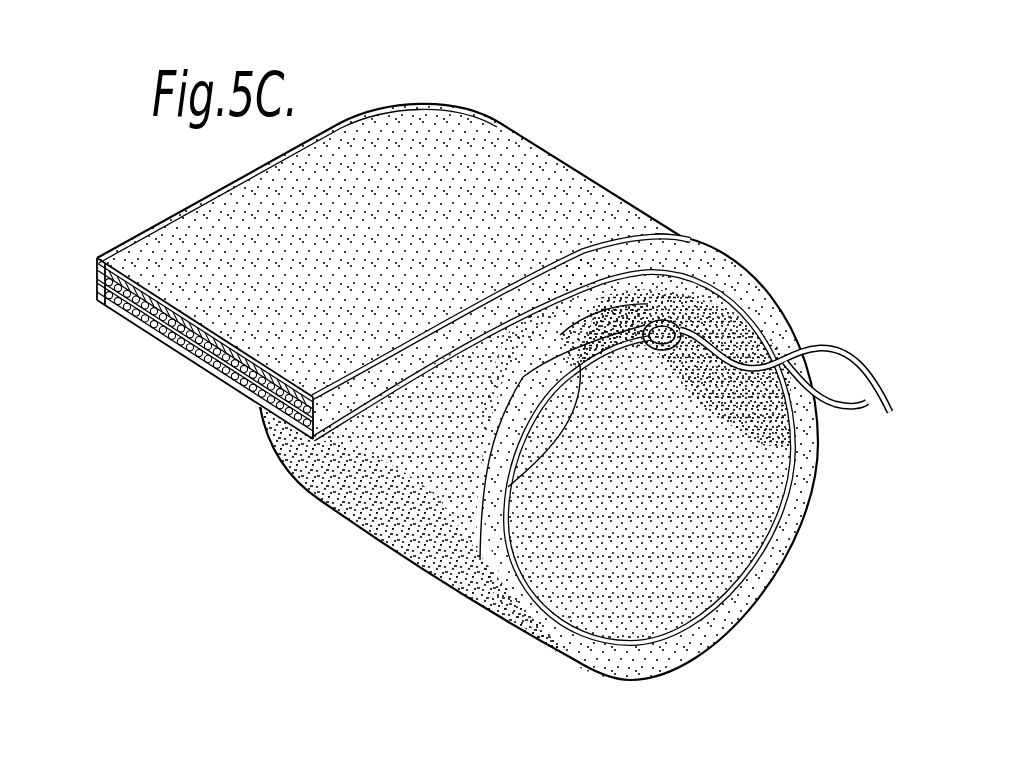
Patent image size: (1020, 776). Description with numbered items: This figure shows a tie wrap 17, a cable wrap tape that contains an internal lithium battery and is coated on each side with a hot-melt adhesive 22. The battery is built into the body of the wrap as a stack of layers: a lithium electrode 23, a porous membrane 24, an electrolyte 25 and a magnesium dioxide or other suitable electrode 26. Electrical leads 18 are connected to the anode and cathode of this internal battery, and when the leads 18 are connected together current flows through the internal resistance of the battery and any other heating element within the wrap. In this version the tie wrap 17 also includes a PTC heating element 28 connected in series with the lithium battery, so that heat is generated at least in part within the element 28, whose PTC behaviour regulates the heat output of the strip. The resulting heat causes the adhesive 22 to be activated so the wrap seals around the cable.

The tie wrap 17 is at (610, 160).
The electrical leads 18 is at (822, 350).
The hot-melt adhesive 22 is at (346, 156).
The lithium electrode 23 is at (95, 281).
The porous membrane 24 is at (142, 331).
The electrolyte 25 is at (234, 388).
The magnesium dioxide electrode 26 is at (197, 370).
The PTC heating element 28 is at (117, 250).